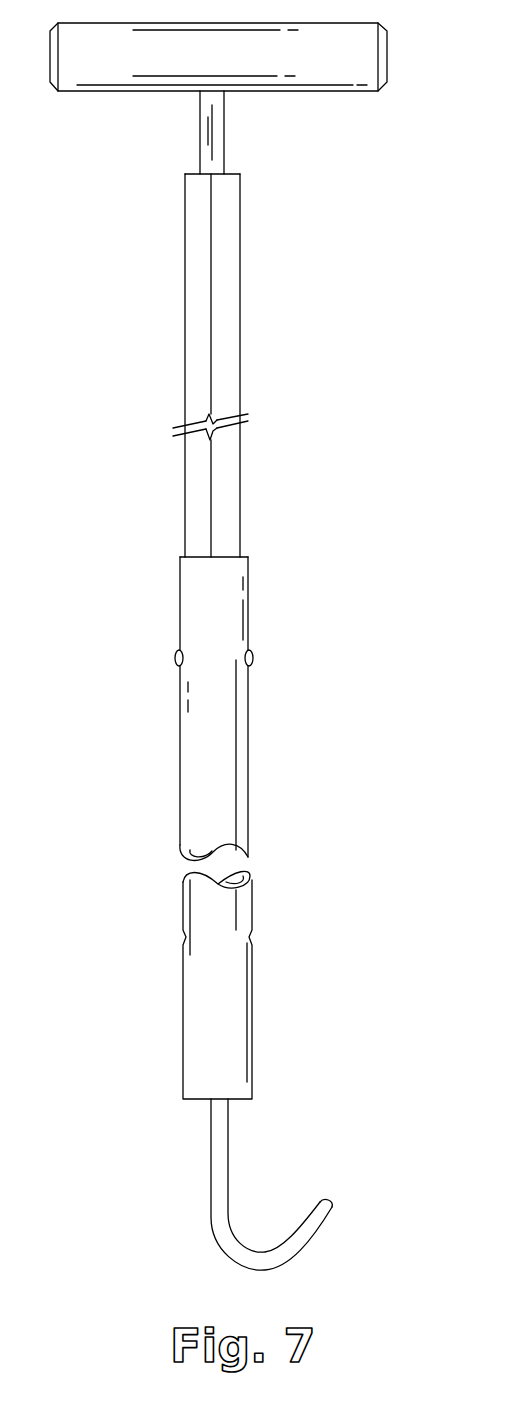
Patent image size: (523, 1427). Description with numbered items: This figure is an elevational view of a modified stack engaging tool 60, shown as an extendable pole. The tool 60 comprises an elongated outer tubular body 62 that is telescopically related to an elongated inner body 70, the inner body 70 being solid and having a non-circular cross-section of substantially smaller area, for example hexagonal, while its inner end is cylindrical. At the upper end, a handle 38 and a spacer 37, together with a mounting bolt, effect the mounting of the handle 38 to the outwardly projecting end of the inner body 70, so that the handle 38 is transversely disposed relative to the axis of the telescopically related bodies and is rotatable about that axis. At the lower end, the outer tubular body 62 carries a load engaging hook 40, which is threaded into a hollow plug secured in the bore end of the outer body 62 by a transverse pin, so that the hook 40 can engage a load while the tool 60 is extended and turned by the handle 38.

The stack engaging tool 60 is at (348, 590).
The handle 38 is at (305, 72).
The spacer 37 is at (200, 140).
The inner body 70 is at (233, 340).
The outer tubular body 62 is at (250, 793).
The load engaging hook 40 is at (228, 1173).